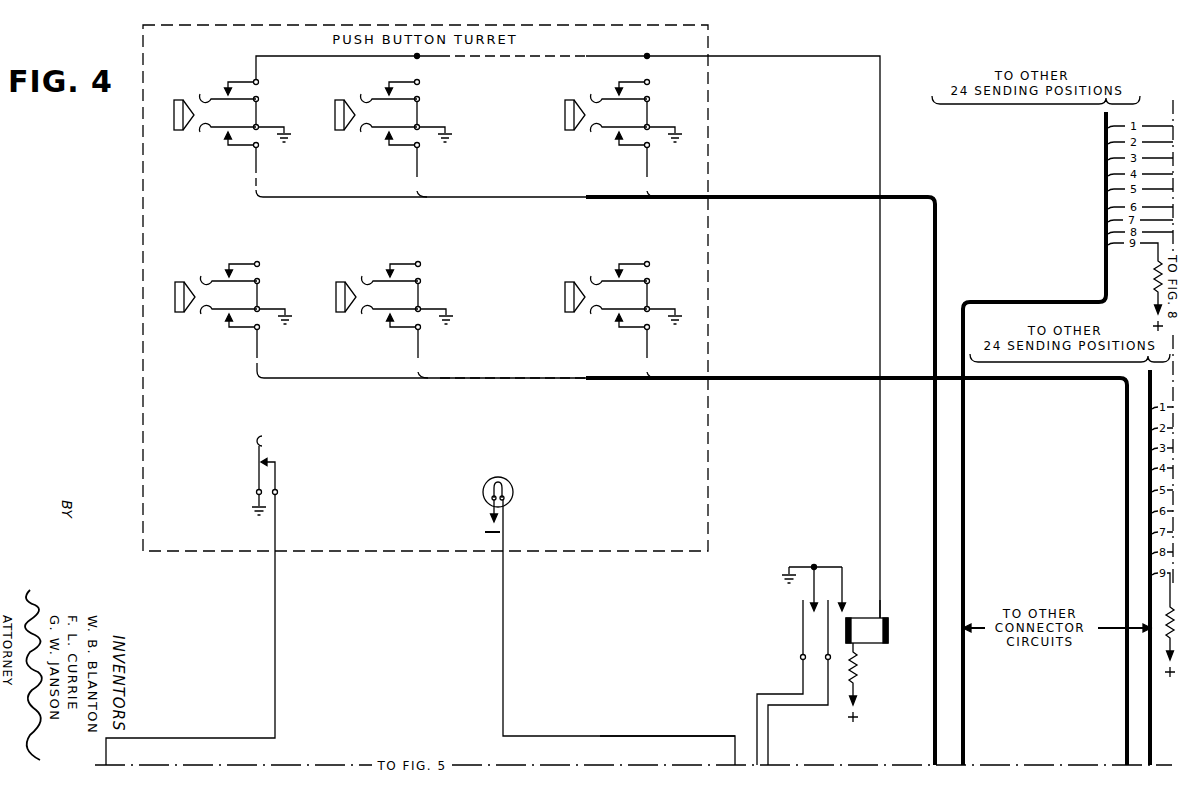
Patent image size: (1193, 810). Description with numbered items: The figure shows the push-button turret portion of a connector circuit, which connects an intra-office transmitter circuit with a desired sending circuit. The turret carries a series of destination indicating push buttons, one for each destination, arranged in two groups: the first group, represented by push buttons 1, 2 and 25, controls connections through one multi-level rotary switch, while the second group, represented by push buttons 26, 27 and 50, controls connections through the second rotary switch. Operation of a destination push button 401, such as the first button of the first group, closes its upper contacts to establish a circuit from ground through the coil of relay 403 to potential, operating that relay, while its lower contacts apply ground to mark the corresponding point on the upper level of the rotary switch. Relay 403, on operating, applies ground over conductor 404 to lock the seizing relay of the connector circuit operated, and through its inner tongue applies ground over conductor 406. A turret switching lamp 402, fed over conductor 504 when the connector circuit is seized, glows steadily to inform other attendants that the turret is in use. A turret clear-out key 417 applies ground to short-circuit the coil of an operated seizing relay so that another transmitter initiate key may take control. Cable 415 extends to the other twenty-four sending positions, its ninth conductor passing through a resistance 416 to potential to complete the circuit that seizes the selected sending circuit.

The destination push button No. 1 is at (225, 114).
The destination push button No. 2 is at (382, 139).
The destination push button No. 25 is at (606, 139).
The destination push button No. 26 is at (367, 320).
The destination push button No. 27 is at (376, 320).
The destination push button No. 50 is at (606, 320).
The destination push button 401 is at (214, 100).
The turret switching lamp 402 is at (500, 478).
The relay 403 is at (870, 646).
The conductor 404 is at (757, 745).
The conductor 406 is at (769, 718).
The cable 415 is at (963, 457).
The resistance 416 is at (1153, 278).
The turret clear-out key 417 is at (267, 456).
The conductor 504 is at (658, 737).